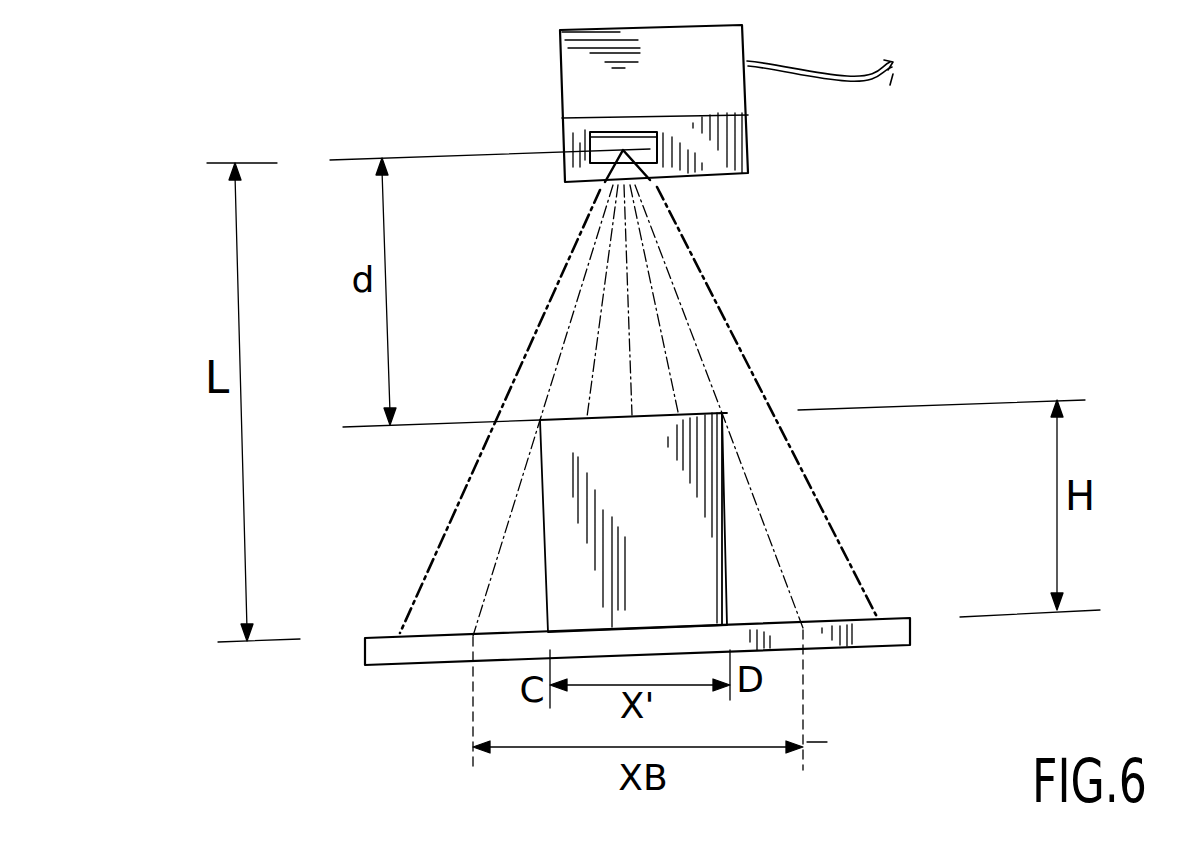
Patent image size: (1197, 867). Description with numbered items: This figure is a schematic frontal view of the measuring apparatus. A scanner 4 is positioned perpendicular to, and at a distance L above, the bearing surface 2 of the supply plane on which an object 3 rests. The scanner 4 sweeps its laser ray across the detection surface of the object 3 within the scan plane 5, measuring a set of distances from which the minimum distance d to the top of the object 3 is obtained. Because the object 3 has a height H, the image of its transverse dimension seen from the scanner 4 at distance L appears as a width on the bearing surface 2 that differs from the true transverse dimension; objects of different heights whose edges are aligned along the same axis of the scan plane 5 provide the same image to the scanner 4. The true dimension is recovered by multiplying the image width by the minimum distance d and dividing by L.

The bearing surface 2 is at (898, 618).
The object 3 is at (563, 576).
The scanner 4 is at (575, 78).
The scan plane 5 is at (450, 518).